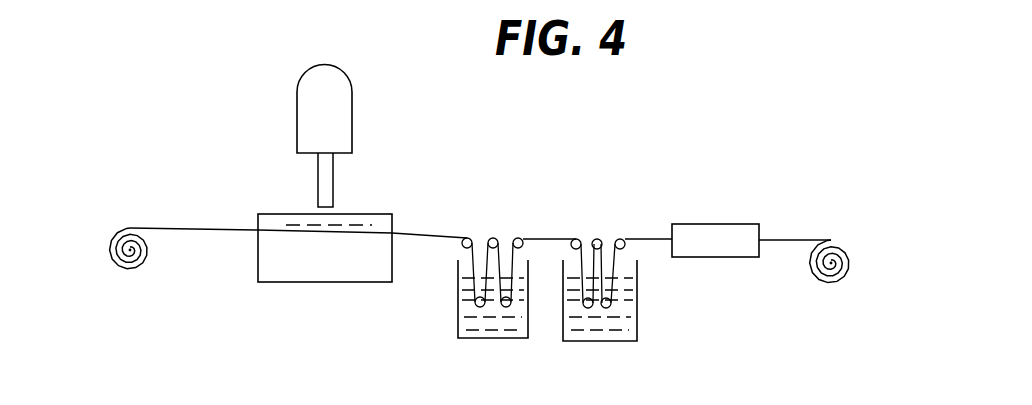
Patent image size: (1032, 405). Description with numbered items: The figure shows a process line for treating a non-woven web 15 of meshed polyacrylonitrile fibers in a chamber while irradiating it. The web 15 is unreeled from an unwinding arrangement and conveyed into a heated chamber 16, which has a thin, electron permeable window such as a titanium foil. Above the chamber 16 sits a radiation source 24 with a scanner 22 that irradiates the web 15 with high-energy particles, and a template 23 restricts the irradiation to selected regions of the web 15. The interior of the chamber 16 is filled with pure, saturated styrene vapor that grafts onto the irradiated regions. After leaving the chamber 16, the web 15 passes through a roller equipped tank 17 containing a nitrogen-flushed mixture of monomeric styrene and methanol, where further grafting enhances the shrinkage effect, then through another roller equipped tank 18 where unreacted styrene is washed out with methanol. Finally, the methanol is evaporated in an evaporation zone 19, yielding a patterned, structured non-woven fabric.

The web 15 is at (130, 270).
The chamber 16 is at (340, 283).
The roller equipped tank 17 is at (503, 340).
The roller equipped tank 18 is at (595, 338).
The evaporation zone 19 is at (718, 258).
The scanner 22 is at (333, 180).
The template 23 is at (292, 222).
The radiation source 24 is at (347, 88).